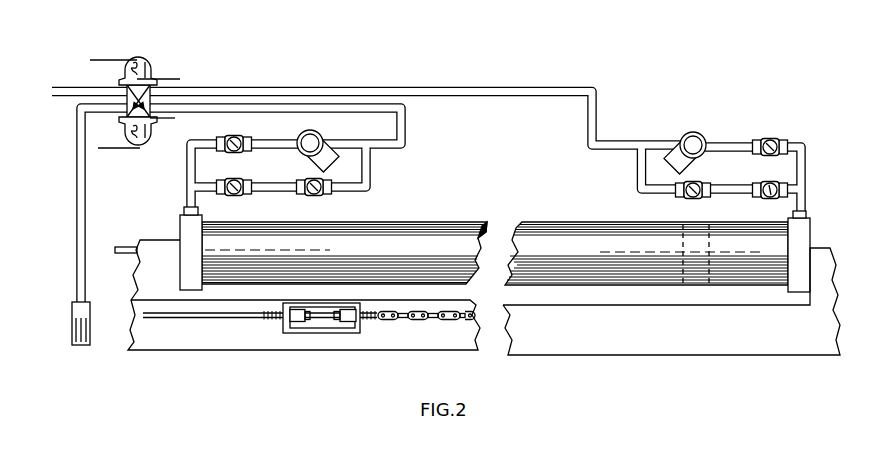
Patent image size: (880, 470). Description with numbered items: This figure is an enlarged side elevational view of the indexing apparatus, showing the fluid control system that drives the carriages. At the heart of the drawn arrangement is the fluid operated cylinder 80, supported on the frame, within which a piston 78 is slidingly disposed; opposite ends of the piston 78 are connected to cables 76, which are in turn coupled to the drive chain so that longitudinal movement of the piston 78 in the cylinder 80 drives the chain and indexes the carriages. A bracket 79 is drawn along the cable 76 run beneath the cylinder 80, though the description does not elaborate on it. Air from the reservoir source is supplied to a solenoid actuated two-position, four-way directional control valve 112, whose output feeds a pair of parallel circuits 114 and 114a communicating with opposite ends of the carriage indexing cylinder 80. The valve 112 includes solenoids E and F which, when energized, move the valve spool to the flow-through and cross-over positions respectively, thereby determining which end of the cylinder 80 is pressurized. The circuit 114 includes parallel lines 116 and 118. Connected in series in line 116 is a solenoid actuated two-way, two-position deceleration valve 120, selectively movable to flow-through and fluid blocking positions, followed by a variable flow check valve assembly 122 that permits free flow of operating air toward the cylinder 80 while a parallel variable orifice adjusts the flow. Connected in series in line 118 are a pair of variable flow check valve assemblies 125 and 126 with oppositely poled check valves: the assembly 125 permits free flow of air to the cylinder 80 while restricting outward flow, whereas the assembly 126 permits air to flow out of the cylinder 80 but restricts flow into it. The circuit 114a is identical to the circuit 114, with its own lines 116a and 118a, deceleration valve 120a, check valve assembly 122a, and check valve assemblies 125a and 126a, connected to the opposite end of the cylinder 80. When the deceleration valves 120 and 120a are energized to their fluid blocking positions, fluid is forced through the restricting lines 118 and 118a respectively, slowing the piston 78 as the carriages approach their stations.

The solenoid actuated 2-position, 4-way valve 112 is at (133, 92).
The solenoid F is at (153, 66).
The solenoid E is at (141, 140).
The parallel circuit 114 is at (598, 113).
The parallel circuit 114a is at (372, 177).
The line 116 is at (725, 144).
The line 116a is at (251, 137).
The line 118 is at (638, 174).
The line 118a is at (371, 191).
The deceleration valve 120 is at (690, 133).
The deceleration valve 120a is at (328, 134).
The variable flow check valve assembly 122 is at (776, 138).
The variable flow check valve assembly 122a is at (240, 152).
The variable flow check valve assembly 125 is at (684, 198).
The variable flow check valve assembly 125a is at (321, 195).
The variable flow check valve assembly 126 is at (760, 198).
The variable flow check valve assembly 126a is at (247, 195).
The cable 76 is at (217, 319).
The piston 78 is at (708, 246).
The adjusting bracket 79 is at (348, 334).
The fluid operated cylinder 80 is at (549, 232).